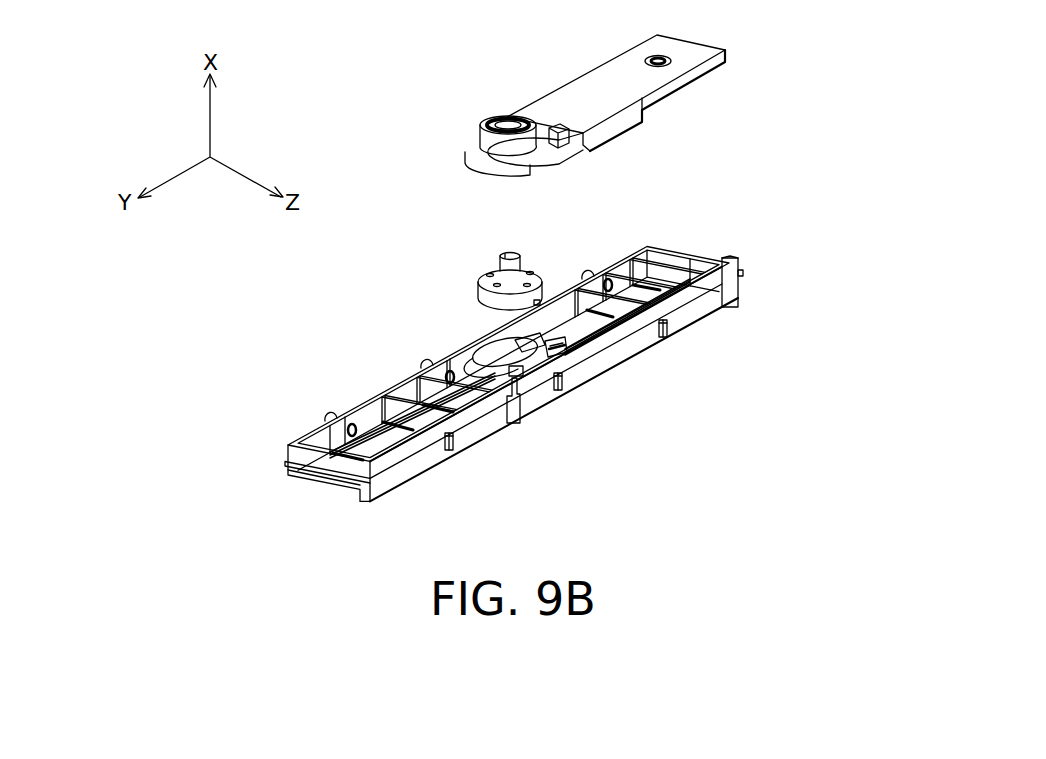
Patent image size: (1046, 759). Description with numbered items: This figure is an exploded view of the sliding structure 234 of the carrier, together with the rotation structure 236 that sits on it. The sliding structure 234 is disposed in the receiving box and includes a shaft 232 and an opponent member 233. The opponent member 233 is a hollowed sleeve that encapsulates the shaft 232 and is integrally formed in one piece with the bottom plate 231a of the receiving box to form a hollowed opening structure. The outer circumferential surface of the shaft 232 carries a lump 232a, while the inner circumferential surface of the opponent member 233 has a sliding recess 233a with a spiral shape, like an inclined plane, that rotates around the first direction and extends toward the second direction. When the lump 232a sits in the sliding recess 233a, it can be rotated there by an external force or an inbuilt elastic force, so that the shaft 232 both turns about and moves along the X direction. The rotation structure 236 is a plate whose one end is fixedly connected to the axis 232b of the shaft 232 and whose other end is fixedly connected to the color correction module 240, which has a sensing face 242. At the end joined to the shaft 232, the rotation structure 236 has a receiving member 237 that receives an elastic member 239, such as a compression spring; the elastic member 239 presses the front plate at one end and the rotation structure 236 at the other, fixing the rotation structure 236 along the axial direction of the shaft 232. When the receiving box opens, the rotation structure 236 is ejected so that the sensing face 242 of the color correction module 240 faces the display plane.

The bottom plate 231a is at (652, 243).
The shaft 232 is at (548, 281).
The lump 232a is at (503, 302).
The axis 232b is at (518, 260).
The opponent member 233 is at (520, 343).
The sliding recess 233a is at (516, 379).
The sliding structure 234 is at (773, 375).
The rotation structure 236 is at (598, 77).
The receiving member 237 is at (497, 122).
The elastic member 239 is at (520, 120).
The color correction module 240 is at (729, 98).
The sensing face 242 is at (668, 101).